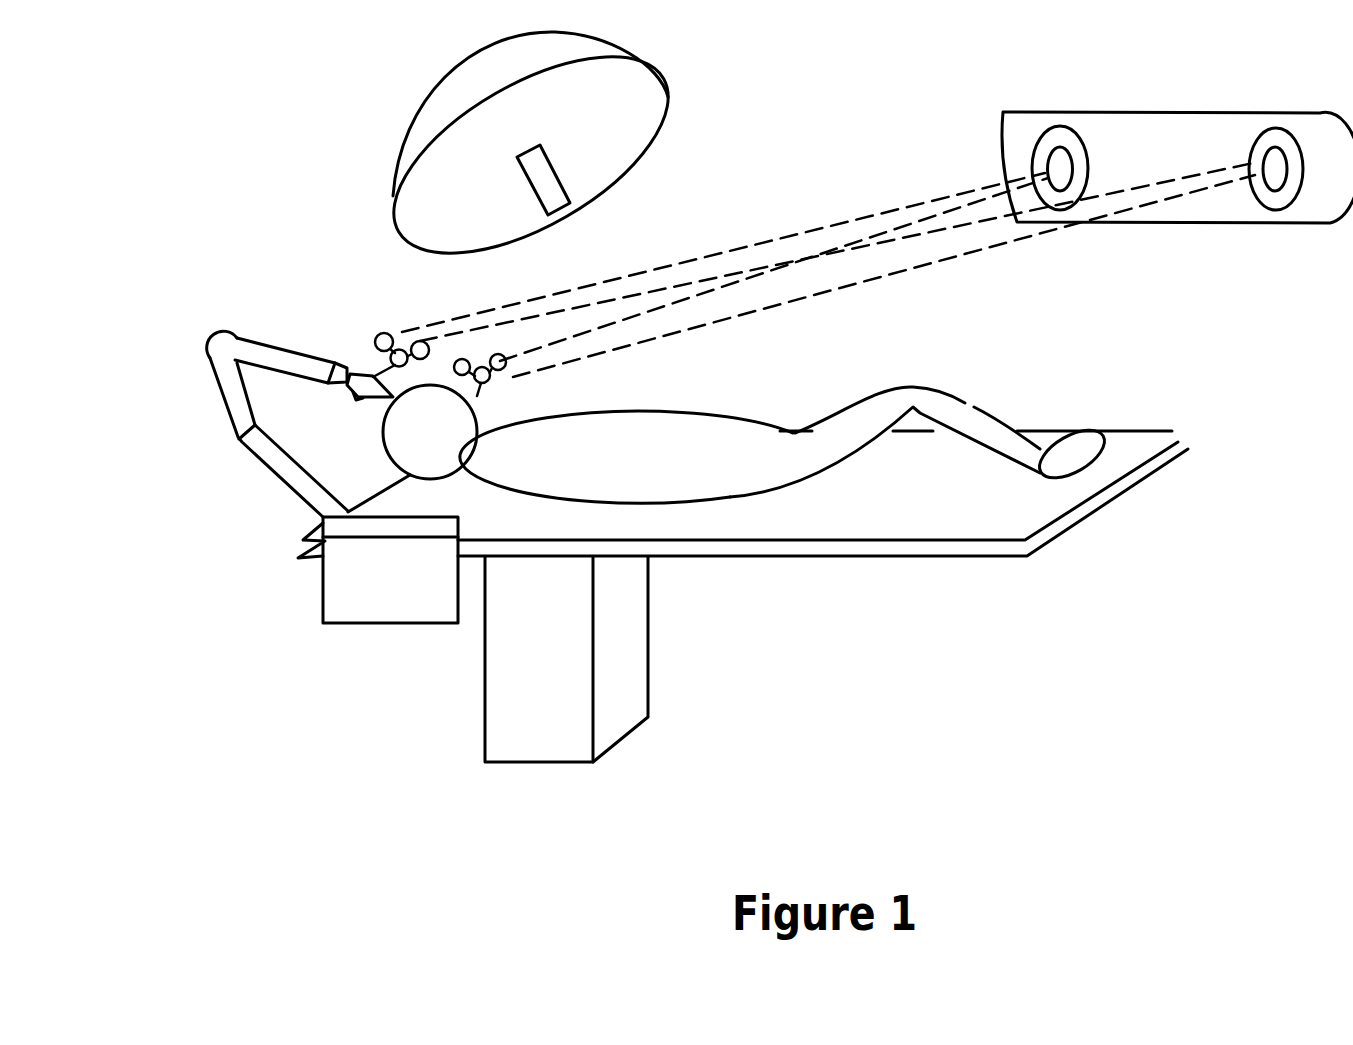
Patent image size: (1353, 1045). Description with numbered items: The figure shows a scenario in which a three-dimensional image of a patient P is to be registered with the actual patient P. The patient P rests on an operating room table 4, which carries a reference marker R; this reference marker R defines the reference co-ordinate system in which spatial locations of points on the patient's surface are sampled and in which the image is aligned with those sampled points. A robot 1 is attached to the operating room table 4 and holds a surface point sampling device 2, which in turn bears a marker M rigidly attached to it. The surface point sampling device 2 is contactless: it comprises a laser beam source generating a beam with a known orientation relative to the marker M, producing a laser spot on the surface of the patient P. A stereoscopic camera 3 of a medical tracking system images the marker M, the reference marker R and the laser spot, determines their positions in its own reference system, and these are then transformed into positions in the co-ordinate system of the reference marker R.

The robot 1 is at (267, 470).
The surface point sampling device 2 is at (347, 390).
The stereoscopic camera 3 is at (1104, 112).
The operating room table 4 is at (938, 550).
The marker M is at (379, 338).
The reference marker R is at (457, 362).
The patient P is at (692, 490).